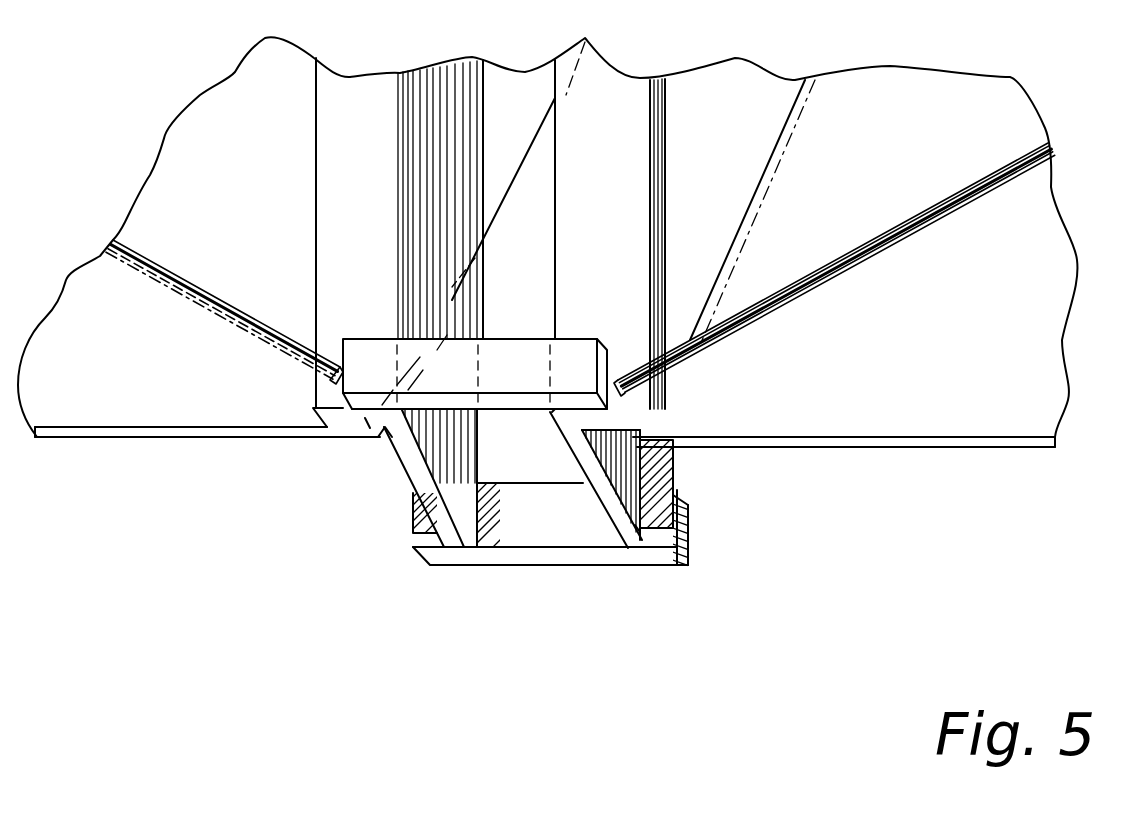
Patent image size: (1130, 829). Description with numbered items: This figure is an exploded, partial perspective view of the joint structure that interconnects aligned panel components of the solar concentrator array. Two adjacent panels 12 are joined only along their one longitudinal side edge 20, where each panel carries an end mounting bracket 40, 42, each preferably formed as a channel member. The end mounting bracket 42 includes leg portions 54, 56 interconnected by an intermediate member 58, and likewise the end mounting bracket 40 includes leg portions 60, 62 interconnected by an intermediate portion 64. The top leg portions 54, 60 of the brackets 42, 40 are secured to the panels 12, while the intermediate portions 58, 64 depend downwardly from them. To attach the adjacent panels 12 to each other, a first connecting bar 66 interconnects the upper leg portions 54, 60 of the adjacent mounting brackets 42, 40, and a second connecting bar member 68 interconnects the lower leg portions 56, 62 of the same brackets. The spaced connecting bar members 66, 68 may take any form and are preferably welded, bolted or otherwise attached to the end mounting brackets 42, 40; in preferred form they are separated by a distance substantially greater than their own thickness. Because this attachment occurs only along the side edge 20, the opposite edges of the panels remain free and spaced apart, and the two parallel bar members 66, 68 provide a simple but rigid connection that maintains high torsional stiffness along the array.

The panel 12 is at (160, 393).
The longitudinal side edge 20 is at (60, 438).
The end mounting bracket 40 is at (625, 502).
The end mounting bracket 42 is at (415, 463).
The leg portion 54 is at (345, 422).
The leg portion 56 is at (435, 540).
The intermediate member 58 is at (417, 490).
The leg portion 60 is at (632, 418).
The leg portion 62 is at (655, 540).
The intermediate portion 64 is at (690, 530).
The first connecting bar 66 is at (577, 360).
The second connecting bar member 68 is at (572, 530).